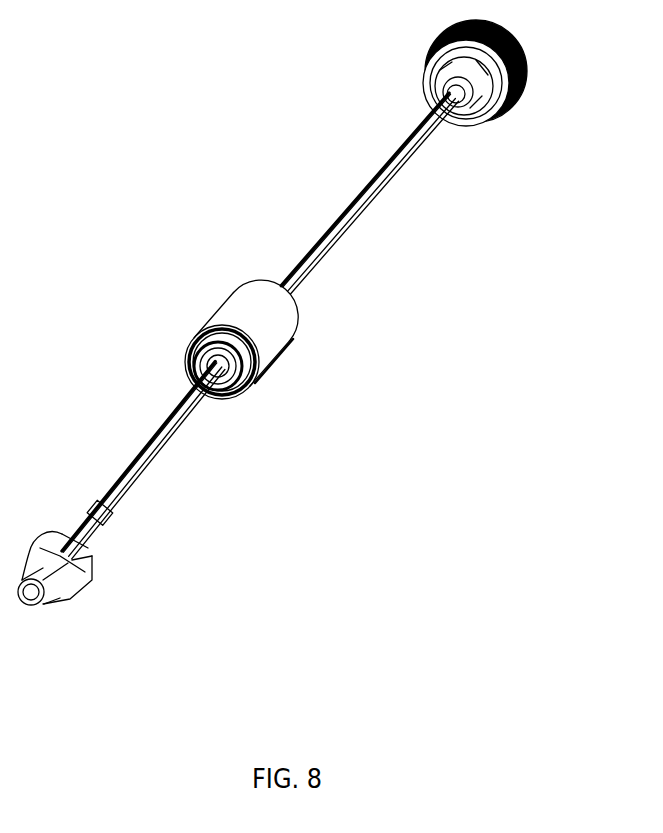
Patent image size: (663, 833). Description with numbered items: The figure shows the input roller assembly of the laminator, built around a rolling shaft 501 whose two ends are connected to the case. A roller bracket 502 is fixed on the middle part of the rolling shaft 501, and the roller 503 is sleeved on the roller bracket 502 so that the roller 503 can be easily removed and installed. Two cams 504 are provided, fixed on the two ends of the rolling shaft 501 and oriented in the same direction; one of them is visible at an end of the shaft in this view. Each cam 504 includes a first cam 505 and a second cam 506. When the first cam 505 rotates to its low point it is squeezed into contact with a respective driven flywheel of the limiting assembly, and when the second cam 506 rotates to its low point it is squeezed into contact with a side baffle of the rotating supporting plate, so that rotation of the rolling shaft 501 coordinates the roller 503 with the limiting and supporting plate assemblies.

The rolling shaft 501 is at (410, 152).
The roller bracket 502 is at (188, 367).
The roller 503 is at (273, 325).
The cam 504 is at (425, 87).
The first cam 505 is at (57, 600).
The second cam 506 is at (93, 570).